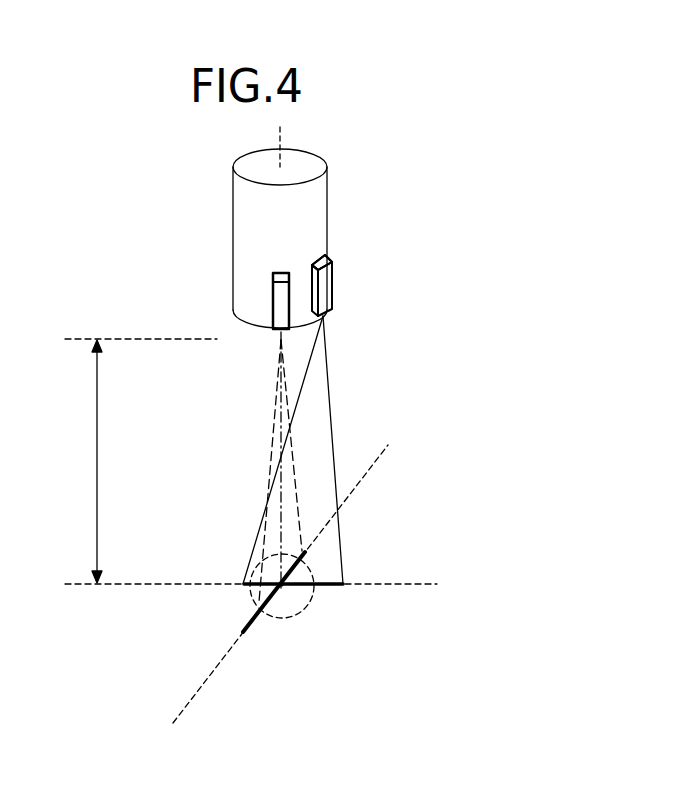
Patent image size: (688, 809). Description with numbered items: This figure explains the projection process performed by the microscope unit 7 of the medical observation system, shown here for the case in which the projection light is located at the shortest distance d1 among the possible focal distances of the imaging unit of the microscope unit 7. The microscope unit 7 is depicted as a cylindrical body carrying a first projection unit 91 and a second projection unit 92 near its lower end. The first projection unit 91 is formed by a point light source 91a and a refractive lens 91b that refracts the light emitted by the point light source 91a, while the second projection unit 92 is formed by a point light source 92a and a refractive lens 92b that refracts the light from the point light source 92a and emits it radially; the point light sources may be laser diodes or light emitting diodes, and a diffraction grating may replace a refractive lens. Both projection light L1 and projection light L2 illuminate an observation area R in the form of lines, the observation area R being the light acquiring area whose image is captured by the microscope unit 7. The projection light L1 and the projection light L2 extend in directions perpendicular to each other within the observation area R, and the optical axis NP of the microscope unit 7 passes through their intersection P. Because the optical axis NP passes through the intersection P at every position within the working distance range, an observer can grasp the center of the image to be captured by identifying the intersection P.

The microscope unit 7 is at (322, 203).
The first projection unit 91 is at (273, 319).
The point light source 91a is at (273, 276).
The refractive lens 91b is at (273, 298).
The second projection unit 92 is at (332, 300).
The point light source 92a is at (332, 266).
The refractive lens 92b is at (332, 289).
The shortest distance d1 is at (250, 461).
The optical axis NP is at (270, 424).
The projection light L1 is at (262, 596).
The projection light L2 is at (332, 580).
The intersection P is at (283, 586).
The observation area R is at (291, 610).